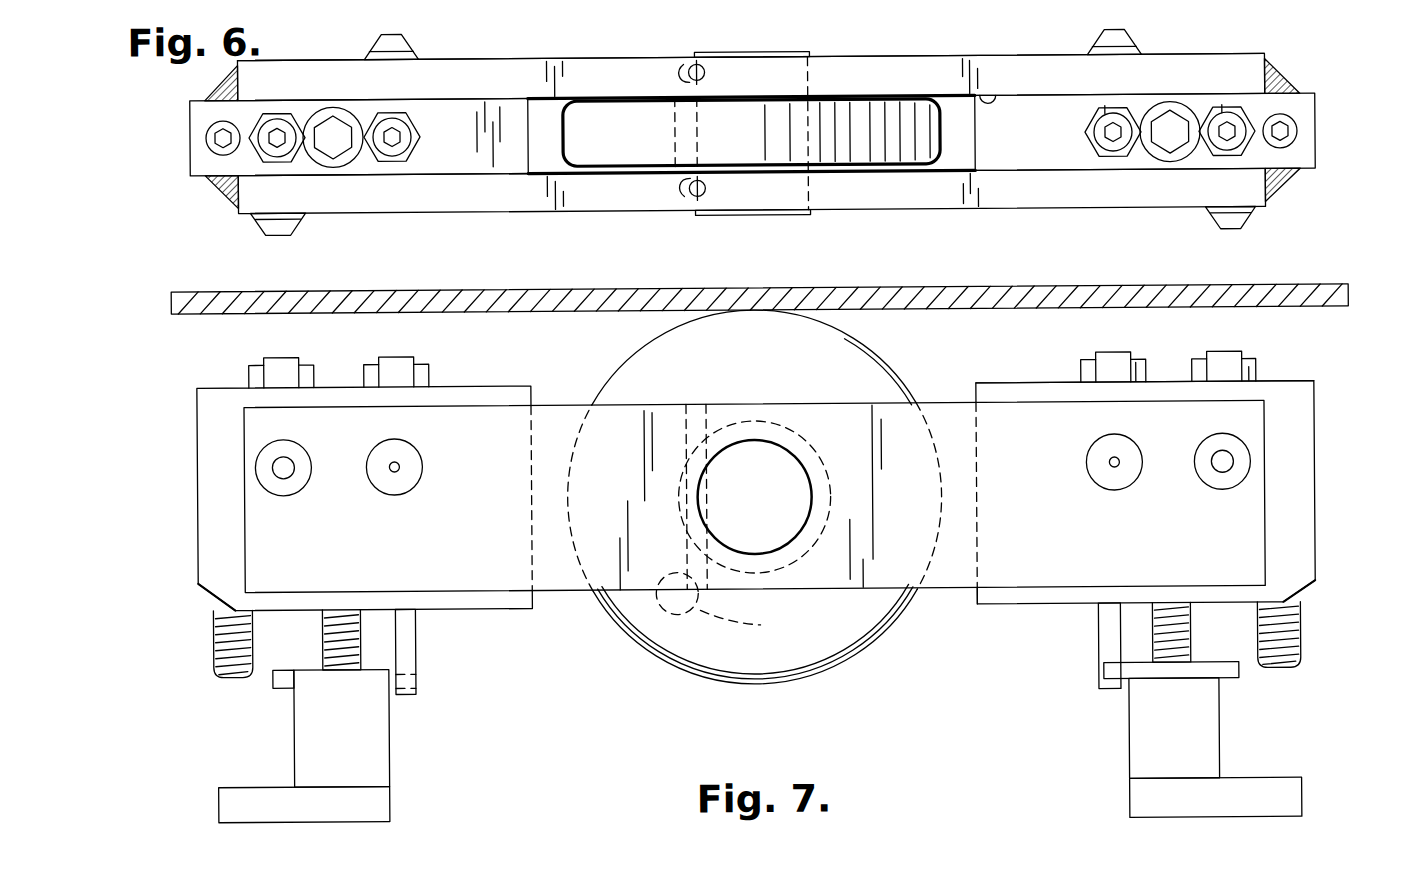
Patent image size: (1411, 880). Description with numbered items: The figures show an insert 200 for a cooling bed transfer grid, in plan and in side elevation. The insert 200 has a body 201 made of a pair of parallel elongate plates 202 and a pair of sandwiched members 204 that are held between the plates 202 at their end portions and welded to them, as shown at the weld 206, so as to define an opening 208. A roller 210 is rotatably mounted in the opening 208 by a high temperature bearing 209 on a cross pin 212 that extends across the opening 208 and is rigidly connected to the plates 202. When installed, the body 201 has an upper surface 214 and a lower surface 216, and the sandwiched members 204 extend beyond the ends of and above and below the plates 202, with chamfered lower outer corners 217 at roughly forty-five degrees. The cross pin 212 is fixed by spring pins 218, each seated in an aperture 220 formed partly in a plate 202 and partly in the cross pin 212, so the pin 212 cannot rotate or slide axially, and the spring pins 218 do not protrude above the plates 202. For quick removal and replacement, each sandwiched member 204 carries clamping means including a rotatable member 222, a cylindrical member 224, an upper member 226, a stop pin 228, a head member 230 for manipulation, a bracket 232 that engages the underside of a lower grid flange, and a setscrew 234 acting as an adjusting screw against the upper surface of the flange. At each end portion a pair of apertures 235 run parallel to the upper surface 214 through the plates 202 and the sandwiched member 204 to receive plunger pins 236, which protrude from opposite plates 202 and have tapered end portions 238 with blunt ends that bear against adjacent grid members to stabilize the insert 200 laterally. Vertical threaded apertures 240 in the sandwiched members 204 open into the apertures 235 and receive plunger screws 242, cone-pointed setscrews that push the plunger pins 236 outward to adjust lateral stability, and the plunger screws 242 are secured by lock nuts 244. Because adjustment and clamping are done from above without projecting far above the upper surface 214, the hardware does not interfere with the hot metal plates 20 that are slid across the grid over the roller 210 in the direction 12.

In FIG. 7, the direction of movement 12 is at (1212, 266).
In FIG. 7, the metal plates 20 is at (1115, 288).
In FIG. 6, the insert 200 is at (893, 50).
In FIG. 7, the insert 200 is at (937, 598).
In FIG. 6, the body 201 is at (342, 57).
In FIG. 6, the plates 202 is at (1170, 56).
In FIG. 7, the plates 202 is at (577, 600).
In FIG. 6, the sandwiched members 204 is at (197, 111).
In FIG. 7, the sandwiched members 204 is at (482, 607).
In FIG. 6, the weld 206 is at (1282, 74).
In FIG. 6, the opening 208 is at (993, 97).
In FIG. 6, the high temperature bearing 209 is at (835, 118).
In FIG. 7, the high temperature bearing 209 is at (795, 430).
In FIG. 6, the roller 210 is at (877, 165).
In FIG. 7, the roller 210 is at (868, 366).
In FIG. 6, the cross pin 212 is at (708, 216).
In FIG. 7, the cross pin 212 is at (772, 482).
In FIG. 6, the upper surface 214 is at (1052, 137).
In FIG. 7, the upper surface 214 is at (1000, 384).
In FIG. 7, the lower surface 216 is at (970, 596).
In FIG. 7, the lower outer corners 217 is at (202, 588).
In FIG. 6, the spring pin 218 is at (706, 66).
In FIG. 7, the spring pin 218 is at (672, 608).
In FIG. 6, the aperture 220 is at (686, 66).
In FIG. 7, the aperture 220 is at (700, 420).
In FIG. 7, the rotatable member 222 is at (322, 631).
In FIG. 7, the cylindrical member 224 is at (390, 726).
In FIG. 7, the upper member 226 is at (283, 685).
In FIG. 7, the stop pin 228 is at (415, 648).
In FIG. 6, the head member 230 is at (345, 165).
In FIG. 7, the bracket 232 is at (248, 814).
In FIG. 6, the setscrew 234 is at (208, 140).
In FIG. 7, the setscrew 234 is at (213, 628).
In FIG. 7, the apertures 235 is at (410, 460).
In FIG. 6, the plunger pin 236 is at (1120, 34).
In FIG. 7, the plunger pin 236 is at (1226, 464).
In FIG. 6, the end portions 238 is at (403, 50).
In FIG. 6, the vertical threaded apertures 240 is at (1228, 113).
In FIG. 6, the plunger screws 242 is at (285, 164).
In FIG. 7, the plunger screws 242 is at (1100, 360).
In FIG. 6, the lock nuts 244 is at (1105, 108).
In FIG. 7, the lock nuts 244 is at (1137, 366).